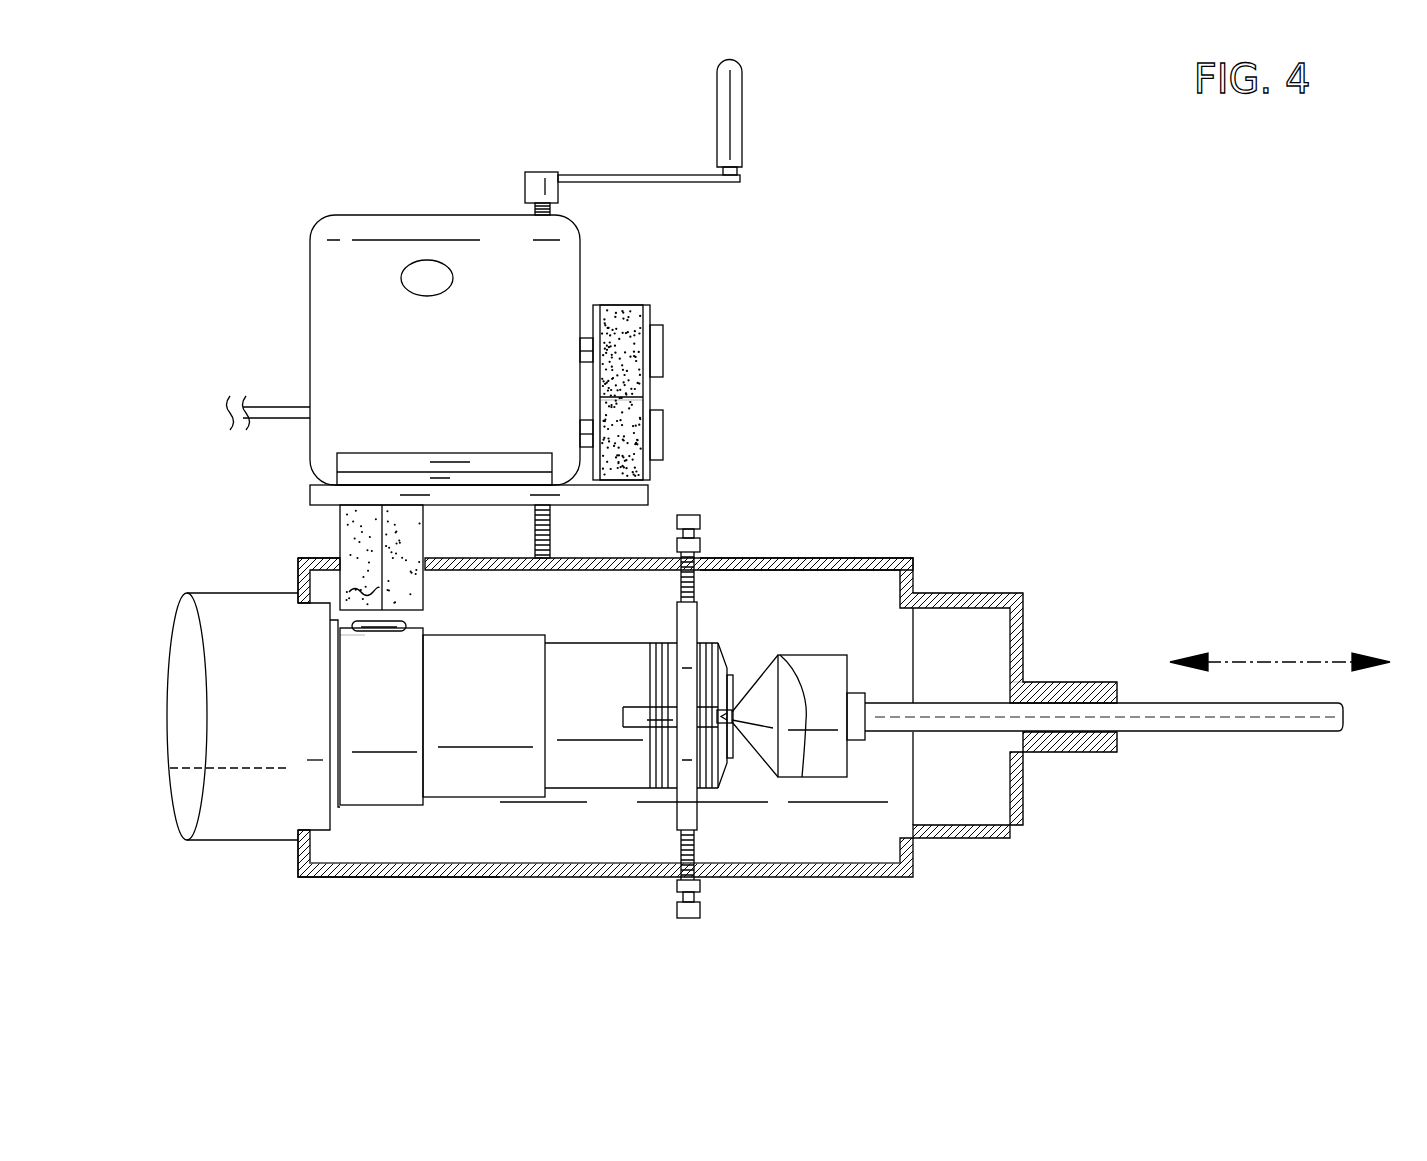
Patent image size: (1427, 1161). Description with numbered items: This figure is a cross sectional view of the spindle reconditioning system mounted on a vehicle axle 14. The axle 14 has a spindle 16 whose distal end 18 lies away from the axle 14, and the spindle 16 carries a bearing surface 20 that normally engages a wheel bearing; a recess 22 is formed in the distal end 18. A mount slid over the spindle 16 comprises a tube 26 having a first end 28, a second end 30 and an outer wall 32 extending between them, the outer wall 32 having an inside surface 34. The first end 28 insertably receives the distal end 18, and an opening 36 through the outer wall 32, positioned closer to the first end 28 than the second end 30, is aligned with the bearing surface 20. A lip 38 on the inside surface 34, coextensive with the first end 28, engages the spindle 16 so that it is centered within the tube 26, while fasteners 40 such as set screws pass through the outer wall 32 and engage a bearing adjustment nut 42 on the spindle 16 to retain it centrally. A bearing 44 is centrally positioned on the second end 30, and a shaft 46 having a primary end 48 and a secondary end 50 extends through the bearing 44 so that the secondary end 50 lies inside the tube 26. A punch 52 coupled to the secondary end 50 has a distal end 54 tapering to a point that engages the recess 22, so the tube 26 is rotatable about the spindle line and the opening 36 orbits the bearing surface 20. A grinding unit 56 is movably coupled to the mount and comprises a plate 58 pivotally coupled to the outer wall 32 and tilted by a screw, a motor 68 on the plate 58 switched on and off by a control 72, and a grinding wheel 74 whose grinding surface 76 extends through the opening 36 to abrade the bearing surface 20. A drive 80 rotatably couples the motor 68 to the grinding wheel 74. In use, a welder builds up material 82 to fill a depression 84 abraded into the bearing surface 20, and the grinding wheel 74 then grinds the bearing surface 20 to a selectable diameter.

The axle 14 is at (213, 592).
The spindle 16 is at (500, 803).
The distal end 18 is at (727, 672).
The bearing surface 20 is at (400, 773).
The recess 22 is at (745, 717).
The tube 26 is at (763, 556).
The first end 28 is at (296, 556).
The second end 30 is at (915, 573).
The outer wall 32 is at (878, 556).
The inside surface 34 is at (573, 858).
The opening 36 is at (362, 567).
The lip 38 is at (293, 857).
The fasteners 40 is at (688, 513).
The bearing adjustment nut 42 is at (677, 622).
The bearing 44 is at (1062, 682).
The shaft 46 is at (1135, 700).
The primary end 48 is at (1343, 733).
The secondary end 50 is at (855, 693).
The punch 52 is at (837, 780).
The distal end 54 is at (718, 722).
The grinding unit 56 is at (704, 310).
The plate 58 is at (618, 480).
The motor 68 is at (385, 215).
The control 72 is at (430, 260).
The grinding wheel 74 is at (337, 583).
The grinding surface 76 is at (342, 635).
The drive 80 is at (621, 305).
The material 82 is at (363, 637).
The depression 84 is at (367, 631).